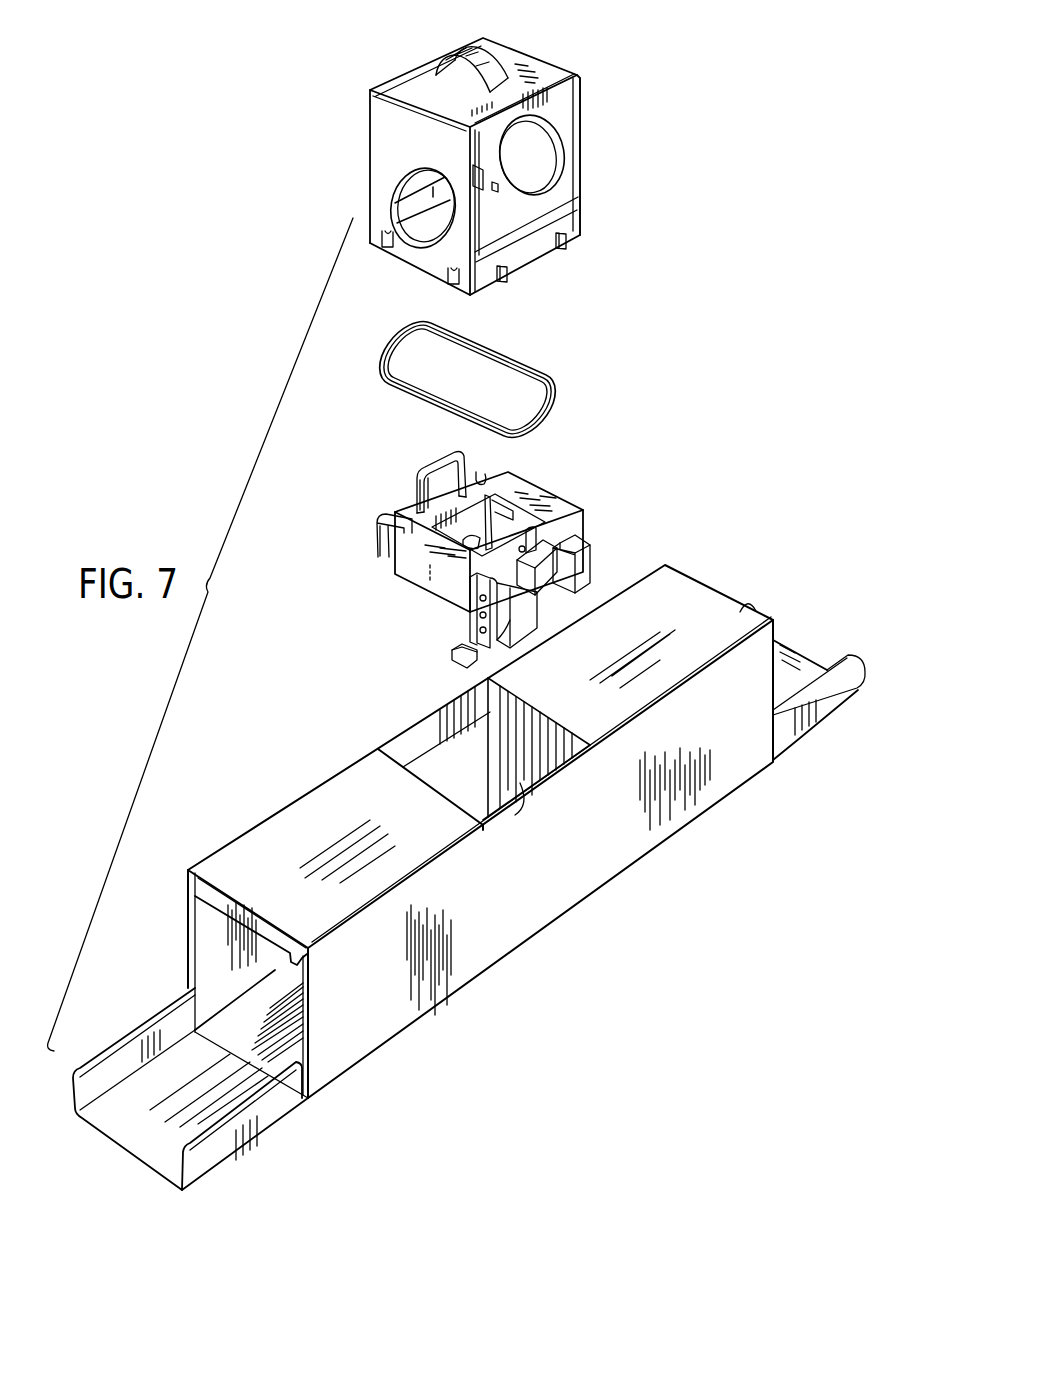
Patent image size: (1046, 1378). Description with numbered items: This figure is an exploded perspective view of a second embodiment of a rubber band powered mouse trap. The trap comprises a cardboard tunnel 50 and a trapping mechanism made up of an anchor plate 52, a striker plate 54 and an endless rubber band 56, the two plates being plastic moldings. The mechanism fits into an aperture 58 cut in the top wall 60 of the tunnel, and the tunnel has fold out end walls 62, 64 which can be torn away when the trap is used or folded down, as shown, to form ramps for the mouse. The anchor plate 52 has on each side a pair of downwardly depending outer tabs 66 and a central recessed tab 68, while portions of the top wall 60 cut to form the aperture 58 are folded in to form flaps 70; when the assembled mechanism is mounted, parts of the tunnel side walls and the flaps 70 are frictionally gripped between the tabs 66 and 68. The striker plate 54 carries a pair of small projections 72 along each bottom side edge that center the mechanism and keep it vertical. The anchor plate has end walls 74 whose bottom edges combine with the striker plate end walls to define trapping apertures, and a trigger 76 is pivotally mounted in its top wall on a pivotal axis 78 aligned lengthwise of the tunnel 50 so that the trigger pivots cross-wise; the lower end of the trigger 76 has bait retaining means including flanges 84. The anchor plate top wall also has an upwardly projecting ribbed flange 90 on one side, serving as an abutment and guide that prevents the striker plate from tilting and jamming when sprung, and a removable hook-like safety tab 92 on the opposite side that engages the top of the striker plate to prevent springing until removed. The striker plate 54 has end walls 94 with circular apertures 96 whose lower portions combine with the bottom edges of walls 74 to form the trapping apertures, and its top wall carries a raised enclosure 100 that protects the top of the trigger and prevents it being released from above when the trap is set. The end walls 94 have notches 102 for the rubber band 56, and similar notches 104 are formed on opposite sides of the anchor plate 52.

The cardboard tunnel 50 is at (592, 920).
The anchor plate 52 is at (463, 558).
The striker plate 54 is at (340, 146).
The endless rubber band 56 is at (375, 397).
The aperture 58 is at (483, 732).
The top wall 60 is at (318, 805).
The fold out end wall 62 is at (150, 1137).
The fold out end wall 64 is at (797, 662).
The outer tabs 66 is at (378, 527).
The central recessed tab 68 is at (542, 583).
The flaps 70 is at (417, 748).
The small projections 72 is at (568, 248).
The end walls 74 is at (550, 495).
The trigger 76 is at (468, 503).
The pivotal axis 78 is at (460, 541).
The flanges 84 is at (428, 665).
The ribbed flange 90 is at (448, 455).
The safety tab 92 is at (537, 540).
The end walls 94 is at (388, 122).
The circular apertures 96 is at (550, 168).
The raised enclosure 100 is at (448, 73).
The notches 102 is at (390, 248).
The notches 104 is at (490, 474).